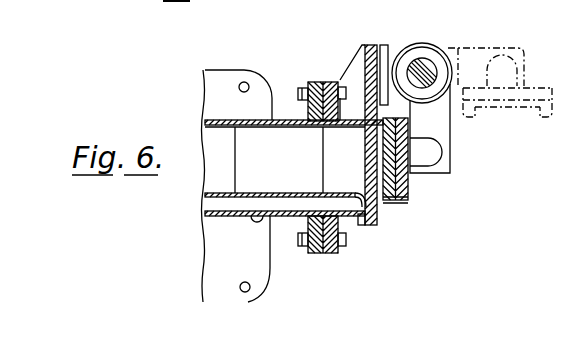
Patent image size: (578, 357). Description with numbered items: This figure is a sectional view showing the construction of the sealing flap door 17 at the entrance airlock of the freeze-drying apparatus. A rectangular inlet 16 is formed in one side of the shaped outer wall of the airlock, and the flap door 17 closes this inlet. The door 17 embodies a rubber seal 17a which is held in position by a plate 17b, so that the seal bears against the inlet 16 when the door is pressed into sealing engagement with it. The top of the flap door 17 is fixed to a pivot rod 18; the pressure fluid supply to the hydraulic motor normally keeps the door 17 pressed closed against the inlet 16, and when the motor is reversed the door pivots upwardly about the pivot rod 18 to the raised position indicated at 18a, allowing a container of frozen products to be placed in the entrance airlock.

The rectangular inlet 16 is at (375, 188).
The sealing flap door 17 is at (402, 187).
The rubber seal 17a is at (397, 200).
The plate 17b is at (388, 205).
The pivot rod 18 is at (418, 62).
The raised position of the flap door 18a is at (520, 68).